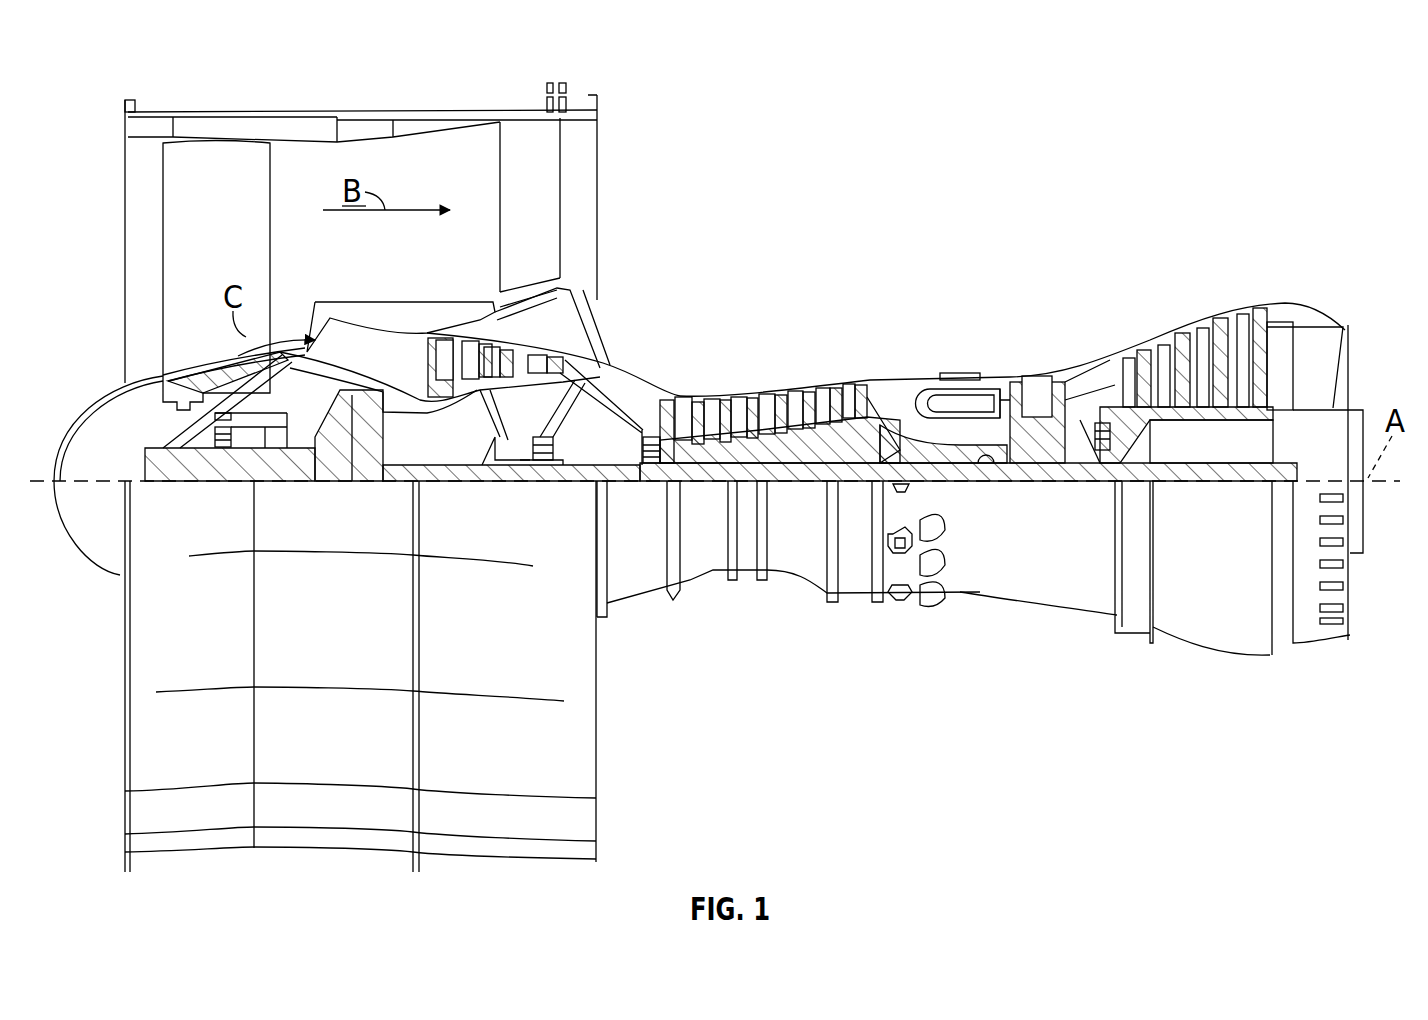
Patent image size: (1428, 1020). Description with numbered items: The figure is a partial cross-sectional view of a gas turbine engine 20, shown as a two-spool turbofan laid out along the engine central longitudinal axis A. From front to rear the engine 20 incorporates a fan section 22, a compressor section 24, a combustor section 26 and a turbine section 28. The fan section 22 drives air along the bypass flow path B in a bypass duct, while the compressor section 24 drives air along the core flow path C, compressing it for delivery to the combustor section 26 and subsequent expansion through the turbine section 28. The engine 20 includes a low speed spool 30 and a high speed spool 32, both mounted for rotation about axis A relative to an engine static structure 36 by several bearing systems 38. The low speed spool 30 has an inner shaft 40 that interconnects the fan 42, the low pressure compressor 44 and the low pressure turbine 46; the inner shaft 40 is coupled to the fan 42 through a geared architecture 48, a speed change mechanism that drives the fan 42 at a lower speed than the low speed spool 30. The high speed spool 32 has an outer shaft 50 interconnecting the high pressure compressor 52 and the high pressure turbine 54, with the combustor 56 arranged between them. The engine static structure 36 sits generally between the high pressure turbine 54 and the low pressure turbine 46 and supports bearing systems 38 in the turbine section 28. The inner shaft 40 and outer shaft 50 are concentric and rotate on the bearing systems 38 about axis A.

The gas turbine engine 20 is at (1172, 147).
The fan section 22 is at (235, 104).
The compressor section 24 is at (787, 335).
The combustor section 26 is at (953, 335).
The turbine section 28 is at (1102, 313).
The low speed spool 30 is at (822, 483).
The high speed spool 32 is at (878, 410).
The engine static structure 36 is at (860, 603).
The bearing systems 38 is at (228, 448).
The inner shaft 40 is at (608, 483).
The fan 42 is at (240, 242).
The low pressure compressor 44 is at (515, 352).
The low pressure turbine 46 is at (1205, 340).
The geared architecture 48 is at (360, 452).
The outer shaft 50 is at (985, 458).
The high pressure compressor 52 is at (776, 445).
The high pressure turbine 54 is at (1040, 375).
The combustor 56 is at (963, 396).